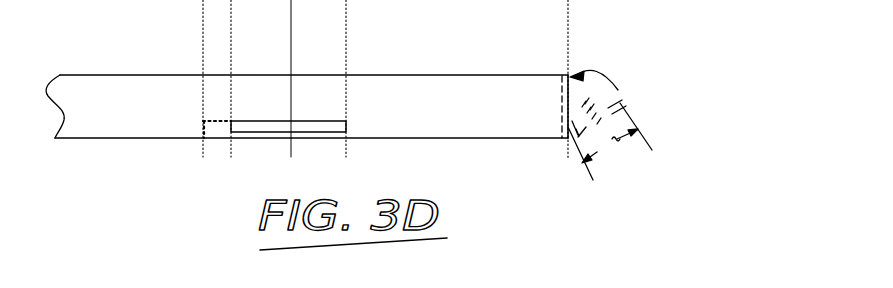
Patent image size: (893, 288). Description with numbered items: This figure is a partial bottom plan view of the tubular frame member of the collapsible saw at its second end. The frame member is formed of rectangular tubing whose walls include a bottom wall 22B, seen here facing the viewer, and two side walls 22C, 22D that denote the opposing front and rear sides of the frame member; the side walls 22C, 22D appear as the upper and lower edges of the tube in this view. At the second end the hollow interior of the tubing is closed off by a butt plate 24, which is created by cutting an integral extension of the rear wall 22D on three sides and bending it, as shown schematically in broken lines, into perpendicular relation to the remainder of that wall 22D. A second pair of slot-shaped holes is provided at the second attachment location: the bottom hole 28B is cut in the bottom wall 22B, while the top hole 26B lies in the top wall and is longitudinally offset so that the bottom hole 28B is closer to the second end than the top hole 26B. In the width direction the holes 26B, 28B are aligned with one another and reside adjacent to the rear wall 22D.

The bottom wall 22B is at (480, 118).
The side wall 22C is at (130, 75).
The side wall 22D is at (138, 142).
The butt plate 24 is at (620, 104).
The top hole 26B is at (222, 128).
The bottom hole 28B is at (279, 127).